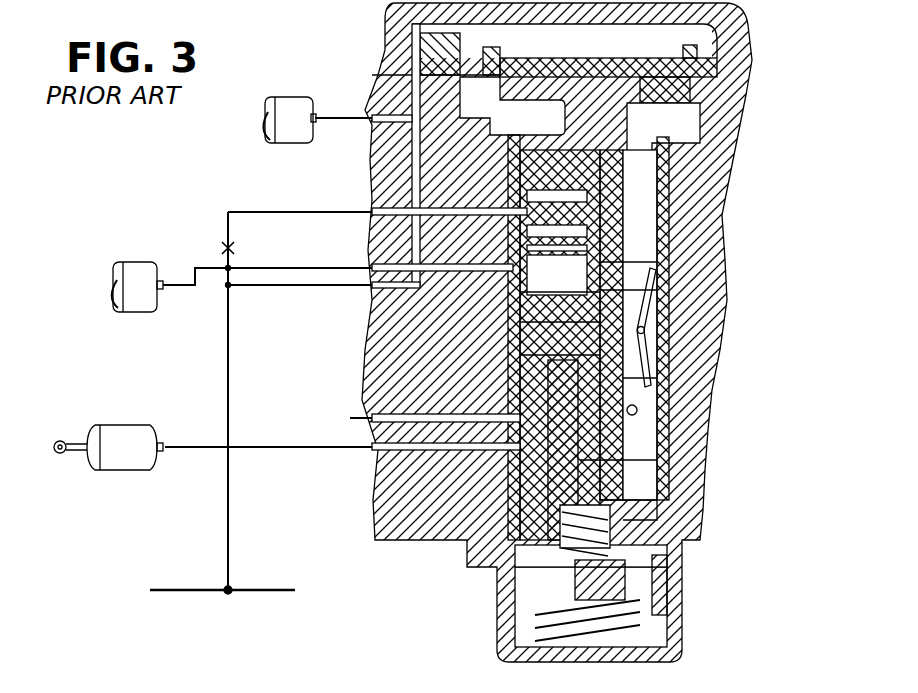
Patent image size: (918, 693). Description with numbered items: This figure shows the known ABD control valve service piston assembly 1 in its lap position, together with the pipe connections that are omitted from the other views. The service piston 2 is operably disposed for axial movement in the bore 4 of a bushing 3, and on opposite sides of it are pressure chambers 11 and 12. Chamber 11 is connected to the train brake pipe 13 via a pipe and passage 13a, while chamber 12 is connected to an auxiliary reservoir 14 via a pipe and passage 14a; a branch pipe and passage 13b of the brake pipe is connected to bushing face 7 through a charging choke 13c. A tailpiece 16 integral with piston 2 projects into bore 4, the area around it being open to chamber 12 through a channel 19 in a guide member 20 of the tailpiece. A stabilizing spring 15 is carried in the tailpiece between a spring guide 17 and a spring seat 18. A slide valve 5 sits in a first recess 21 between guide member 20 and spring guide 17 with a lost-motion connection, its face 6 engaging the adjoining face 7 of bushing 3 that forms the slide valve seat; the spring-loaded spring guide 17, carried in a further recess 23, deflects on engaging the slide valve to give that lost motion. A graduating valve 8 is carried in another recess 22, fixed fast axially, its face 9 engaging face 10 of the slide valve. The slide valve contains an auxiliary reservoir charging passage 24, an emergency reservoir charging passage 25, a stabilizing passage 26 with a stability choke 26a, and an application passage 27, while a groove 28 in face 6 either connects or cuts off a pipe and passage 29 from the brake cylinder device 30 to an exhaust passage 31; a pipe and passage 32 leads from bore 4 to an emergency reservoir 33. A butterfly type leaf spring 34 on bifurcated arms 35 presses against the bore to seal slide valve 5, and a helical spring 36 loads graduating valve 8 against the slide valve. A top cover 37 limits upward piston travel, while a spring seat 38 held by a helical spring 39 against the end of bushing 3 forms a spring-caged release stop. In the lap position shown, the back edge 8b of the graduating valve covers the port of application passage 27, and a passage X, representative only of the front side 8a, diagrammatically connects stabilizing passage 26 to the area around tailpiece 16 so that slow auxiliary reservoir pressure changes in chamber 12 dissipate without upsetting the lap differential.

The service piston assembly 1 is at (348, 52).
The service piston 2 is at (697, 60).
The bushing 3 is at (700, 160).
The bore 4 is at (640, 432).
The slide valve 5 is at (520, 292).
The face 6 is at (518, 355).
The face 7 is at (518, 378).
The graduating valve 8 is at (650, 328).
The front side 8a is at (640, 198).
The back edge 8b is at (625, 410).
The face 9 is at (600, 293).
The face 10 is at (520, 322).
The pressure chamber 11 is at (542, 58).
The pressure chamber 12 is at (542, 131).
The train brake pipe 13 is at (228, 542).
The pipe and passage 13a is at (281, 290).
The branch pipe and passage 13b is at (273, 212).
The charging choke 13c is at (228, 246).
The auxiliary reservoir 14 is at (268, 100).
The pipe and passage 14a is at (372, 115).
The stabilizing spring 15 is at (555, 566).
The tailpiece 16 is at (660, 478).
The spring guide 17 is at (655, 503).
The spring seat 18 is at (660, 600).
The channel 19 is at (647, 155).
The guide member 20 is at (512, 160).
The first recess 21 is at (655, 185).
The recess 22 is at (675, 218).
The further recess 23 is at (700, 537).
The auxiliary reservoir charging passage 24 is at (520, 192).
The emergency reservoir charging passage 25 is at (505, 252).
The stabilizing passage 26 is at (508, 233).
The stability choke 26a is at (557, 274).
The application passage 27 is at (612, 462).
The groove 28 is at (497, 420).
The pipe and passage 29 is at (358, 470).
The brake cylinder device 30 is at (160, 425).
The exhaust passage 31 is at (350, 418).
The pipe and passage 32 is at (120, 272).
The emergency reservoir 33 is at (74, 238).
The butterfly type leaf spring 34 is at (640, 380).
The bifurcated arms 35 is at (650, 355).
The helical spring 36 is at (620, 265).
The top cover 37 is at (392, 20).
The spring seat 38 is at (680, 562).
The helical spring 39 is at (520, 630).
The passage X is at (640, 240).